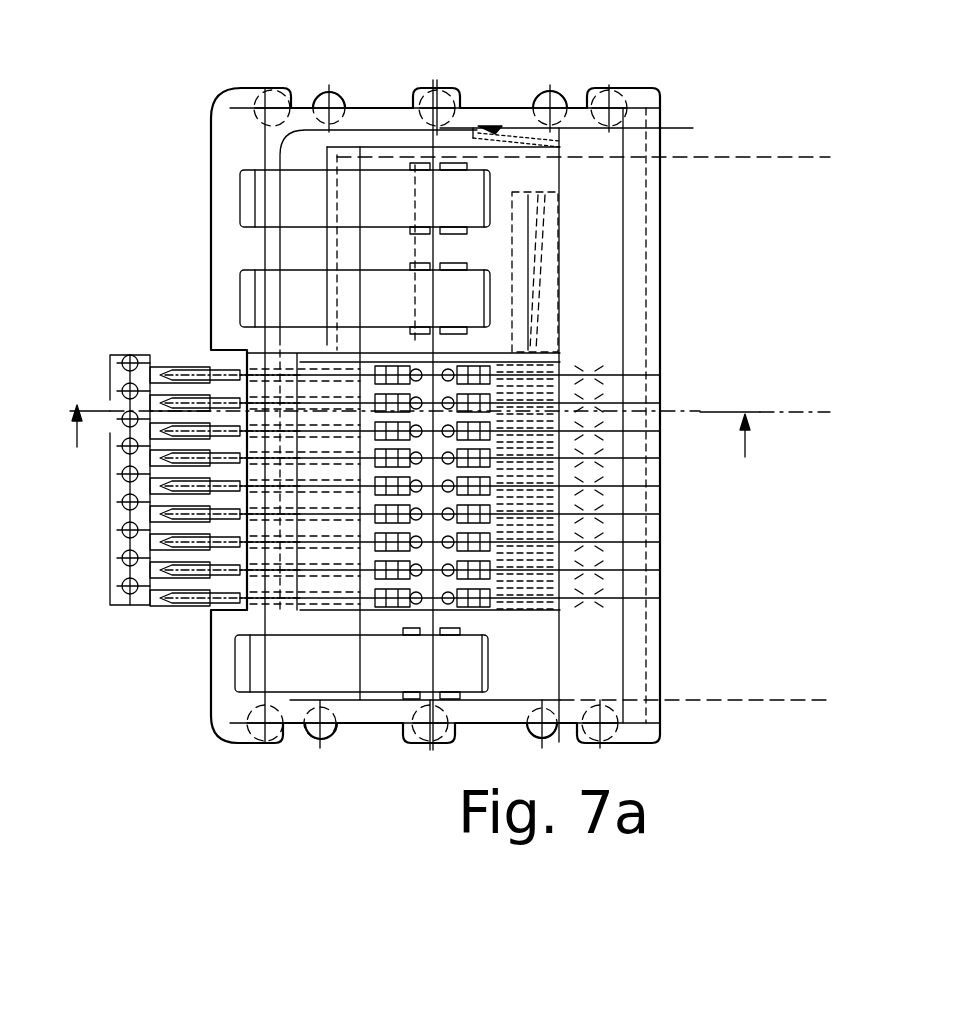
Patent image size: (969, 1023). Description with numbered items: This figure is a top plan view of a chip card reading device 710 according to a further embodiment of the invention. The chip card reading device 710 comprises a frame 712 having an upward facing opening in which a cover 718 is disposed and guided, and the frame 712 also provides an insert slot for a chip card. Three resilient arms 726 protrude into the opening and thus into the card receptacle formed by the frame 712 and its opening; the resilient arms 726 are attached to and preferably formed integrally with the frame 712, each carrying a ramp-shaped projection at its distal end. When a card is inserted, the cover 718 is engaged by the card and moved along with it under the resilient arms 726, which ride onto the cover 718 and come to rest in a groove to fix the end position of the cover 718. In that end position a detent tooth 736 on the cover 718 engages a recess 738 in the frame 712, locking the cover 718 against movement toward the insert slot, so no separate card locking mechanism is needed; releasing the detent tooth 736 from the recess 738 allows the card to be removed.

The chip card reading device 710 is at (430, 435).
The frame 712 is at (228, 253).
The cover 718 is at (592, 328).
The resilient arms 726 is at (470, 198).
The detent tooth 736 is at (507, 127).
The recess 738 is at (483, 127).